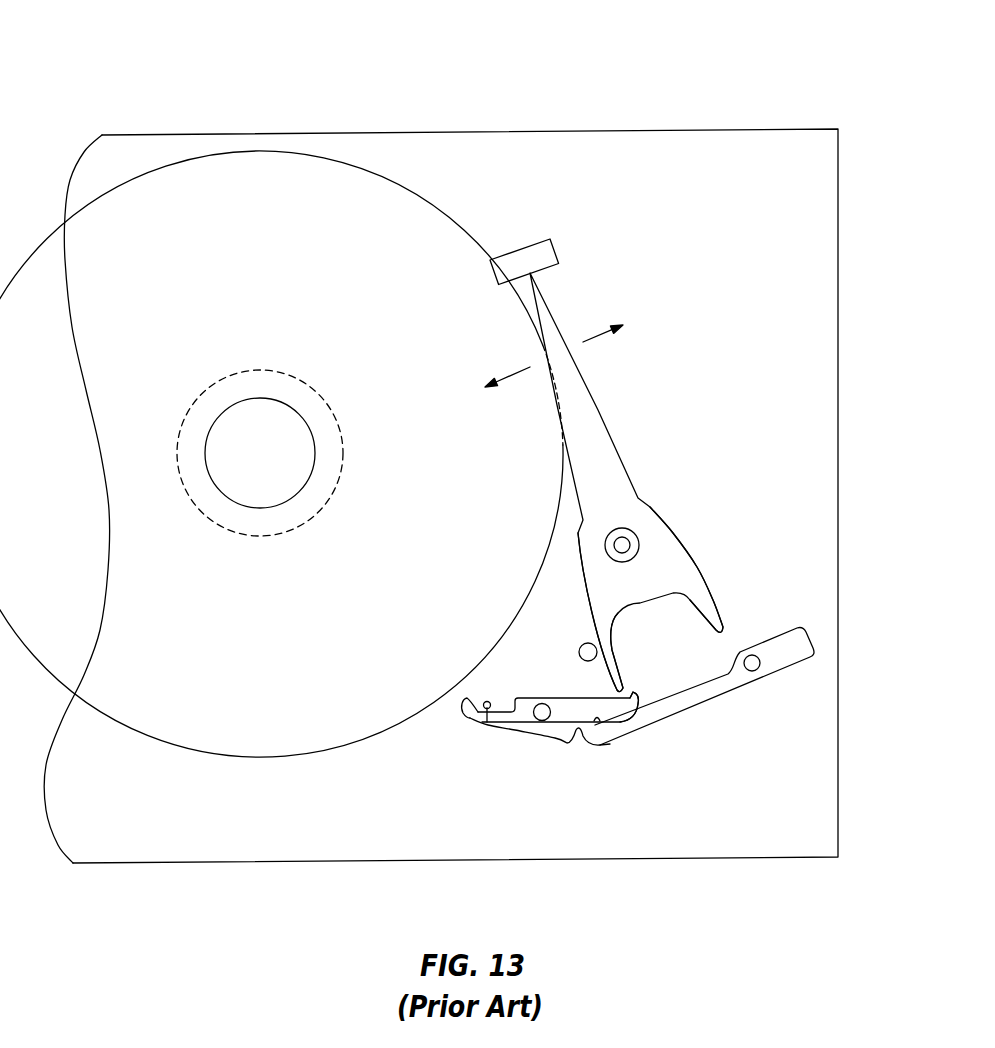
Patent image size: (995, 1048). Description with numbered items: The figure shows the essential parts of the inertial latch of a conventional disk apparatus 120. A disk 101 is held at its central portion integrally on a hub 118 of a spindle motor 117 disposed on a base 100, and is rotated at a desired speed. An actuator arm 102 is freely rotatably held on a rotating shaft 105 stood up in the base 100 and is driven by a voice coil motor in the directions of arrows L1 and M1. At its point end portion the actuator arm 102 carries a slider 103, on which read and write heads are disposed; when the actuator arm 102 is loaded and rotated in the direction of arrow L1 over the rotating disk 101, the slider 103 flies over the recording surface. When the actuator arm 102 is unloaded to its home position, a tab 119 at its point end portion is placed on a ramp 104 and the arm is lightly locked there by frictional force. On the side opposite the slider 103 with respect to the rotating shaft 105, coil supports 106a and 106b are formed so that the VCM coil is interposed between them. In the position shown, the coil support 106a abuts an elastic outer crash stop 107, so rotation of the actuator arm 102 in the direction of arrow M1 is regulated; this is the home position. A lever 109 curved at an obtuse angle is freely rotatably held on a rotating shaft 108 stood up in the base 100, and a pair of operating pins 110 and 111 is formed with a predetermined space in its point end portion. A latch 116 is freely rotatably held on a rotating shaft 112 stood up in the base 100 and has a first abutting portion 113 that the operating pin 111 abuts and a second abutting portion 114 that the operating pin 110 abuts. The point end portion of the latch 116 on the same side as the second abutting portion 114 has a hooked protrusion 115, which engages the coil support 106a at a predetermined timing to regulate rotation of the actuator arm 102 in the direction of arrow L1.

The base 100 is at (670, 142).
The disk 101 is at (375, 182).
The actuator arm 102 is at (598, 430).
The slider 103 is at (535, 272).
The ramp 104 is at (545, 253).
The rotating shaft 105 is at (637, 540).
The coil support 106a is at (612, 647).
The coil support 106b is at (708, 603).
The outer crash stop 107 is at (582, 650).
The rotating shaft 108 is at (758, 672).
The lever 109 is at (805, 627).
The operating pin 110 is at (580, 733).
The operating pin 111 is at (487, 722).
The rotating shaft 112 is at (540, 720).
The first abutting portion 113 is at (505, 712).
The second abutting portion 114 is at (607, 730).
The hooked protrusion 115 is at (633, 690).
The latch 116 is at (603, 703).
The spindle motor 117 is at (317, 388).
The hub 118 is at (217, 420).
The tab 119 is at (522, 270).
The disk apparatus 120 is at (143, 55).
The arrow M1 is at (626, 318).
The arrow L1 is at (487, 392).